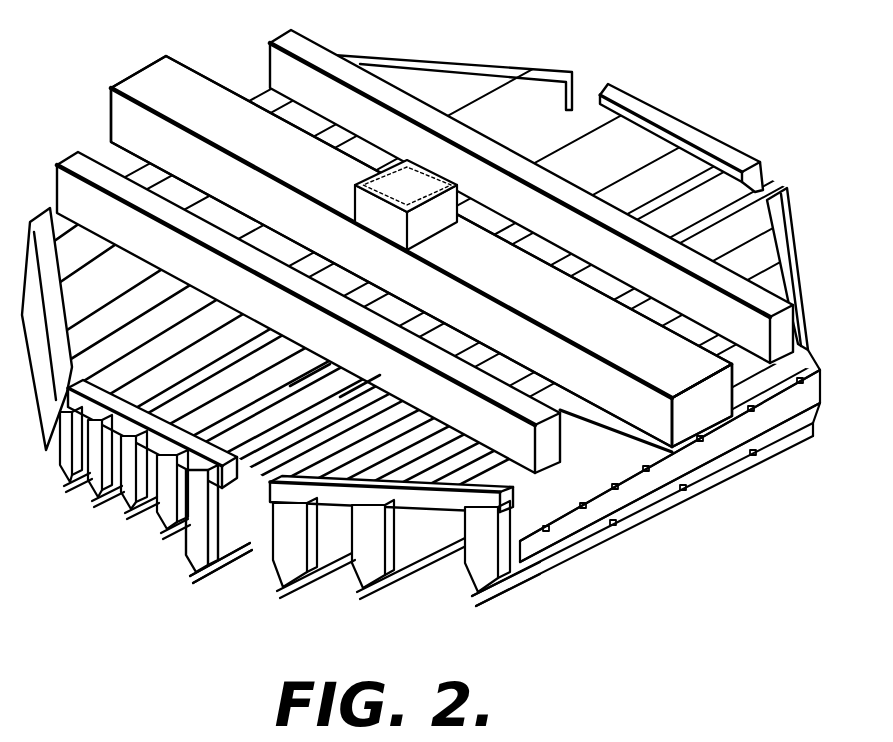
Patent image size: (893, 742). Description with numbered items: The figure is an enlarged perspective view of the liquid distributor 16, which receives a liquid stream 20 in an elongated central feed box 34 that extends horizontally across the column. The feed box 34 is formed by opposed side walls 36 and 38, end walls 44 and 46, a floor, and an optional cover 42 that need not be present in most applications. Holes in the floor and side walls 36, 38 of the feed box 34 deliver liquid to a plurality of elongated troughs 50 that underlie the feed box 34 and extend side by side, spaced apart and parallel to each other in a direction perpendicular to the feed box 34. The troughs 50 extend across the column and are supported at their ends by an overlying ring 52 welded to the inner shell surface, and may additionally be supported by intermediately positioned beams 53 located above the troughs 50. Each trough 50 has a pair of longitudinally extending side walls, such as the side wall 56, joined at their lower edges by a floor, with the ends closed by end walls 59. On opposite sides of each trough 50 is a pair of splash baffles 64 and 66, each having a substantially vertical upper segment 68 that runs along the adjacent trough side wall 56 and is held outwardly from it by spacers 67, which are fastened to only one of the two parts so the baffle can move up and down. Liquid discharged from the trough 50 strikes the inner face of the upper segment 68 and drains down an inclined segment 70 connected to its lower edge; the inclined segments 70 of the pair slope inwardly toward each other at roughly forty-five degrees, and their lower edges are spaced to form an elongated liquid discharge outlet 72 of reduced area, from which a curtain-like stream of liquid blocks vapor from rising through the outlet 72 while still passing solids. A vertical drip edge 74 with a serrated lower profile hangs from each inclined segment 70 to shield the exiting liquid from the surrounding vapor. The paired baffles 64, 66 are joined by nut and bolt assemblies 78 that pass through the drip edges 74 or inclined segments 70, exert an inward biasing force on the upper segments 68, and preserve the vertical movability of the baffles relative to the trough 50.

The liquid distributor 16 is at (436, 49).
The liquid stream 20 is at (392, 133).
The elongated central feed box 34 is at (138, 67).
The side wall 36 is at (641, 392).
The side wall 38 is at (736, 388).
The cover 42 is at (207, 88).
The end wall 44 is at (108, 110).
The end wall 46 is at (709, 431).
The elongated troughs 50 is at (314, 377).
The overlying ring 52 is at (683, 128).
The intermediately positioned beams 53 is at (222, 294).
The side wall of trough 56 is at (388, 405).
The end walls of trough 59 is at (214, 514).
The splash baffle 64 is at (172, 540).
The splash baffle 66 is at (548, 556).
The spacers 67 is at (546, 524).
The upper segment 68 is at (622, 508).
The inclined segment 70 is at (661, 501).
The liquid discharge outlet 72 is at (202, 590).
The vertical drip edge 74 is at (213, 582).
The nut and bolt assemblies 78 is at (614, 538).